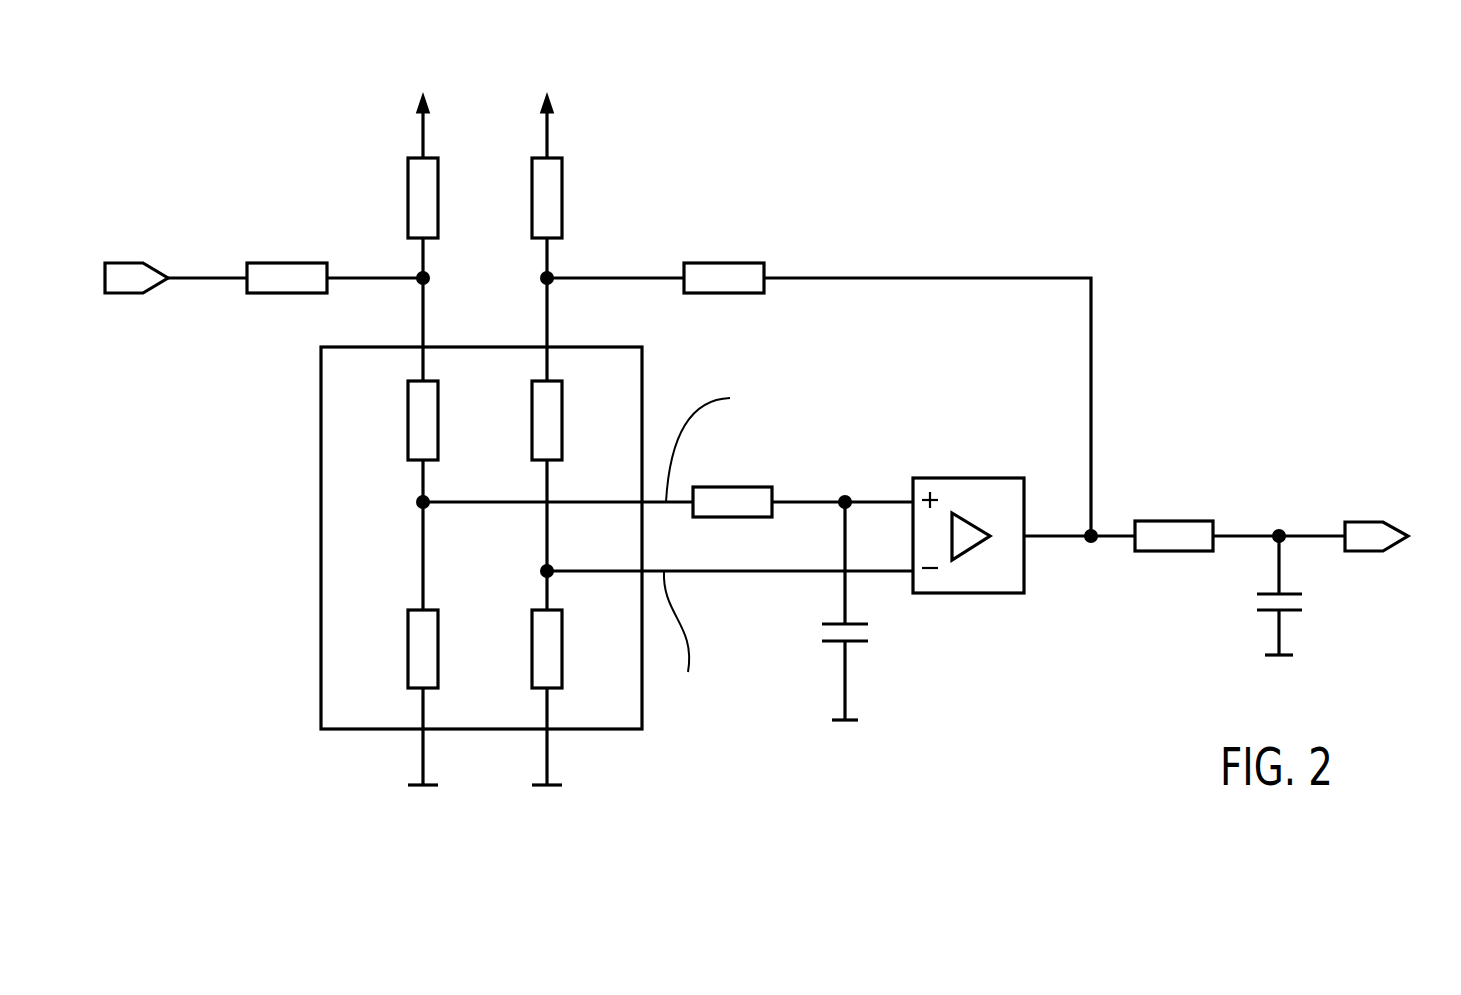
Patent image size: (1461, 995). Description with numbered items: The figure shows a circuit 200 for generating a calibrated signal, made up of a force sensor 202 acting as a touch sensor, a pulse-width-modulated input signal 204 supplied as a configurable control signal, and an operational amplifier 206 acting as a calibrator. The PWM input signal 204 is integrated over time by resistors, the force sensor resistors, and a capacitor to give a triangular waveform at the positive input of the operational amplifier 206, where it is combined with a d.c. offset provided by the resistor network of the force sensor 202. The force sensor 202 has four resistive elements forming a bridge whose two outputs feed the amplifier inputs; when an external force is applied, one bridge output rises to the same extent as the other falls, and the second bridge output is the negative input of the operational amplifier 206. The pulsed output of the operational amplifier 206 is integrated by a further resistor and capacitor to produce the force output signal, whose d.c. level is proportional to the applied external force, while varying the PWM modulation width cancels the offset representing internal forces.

The circuit 200 is at (768, 178).
The force sensor 202 is at (321, 663).
The pulse-width-modulated input signal 204 is at (123, 294).
The operational amplifier 206 is at (968, 478).